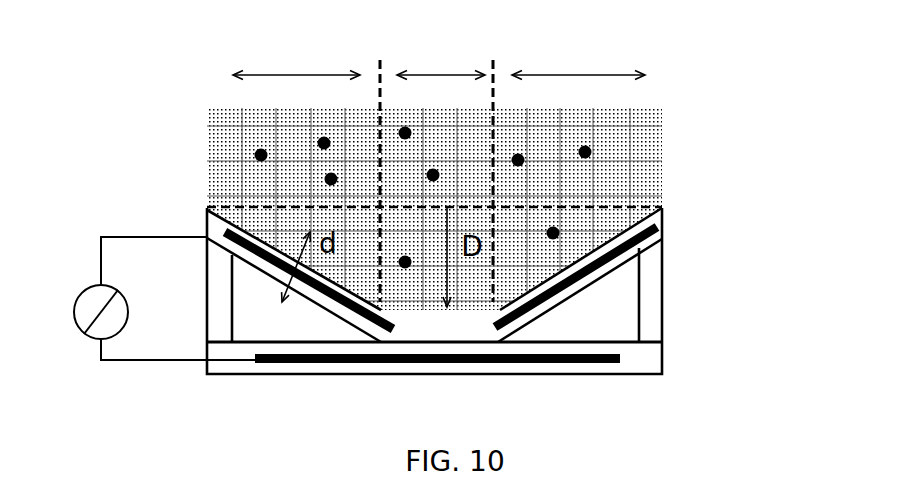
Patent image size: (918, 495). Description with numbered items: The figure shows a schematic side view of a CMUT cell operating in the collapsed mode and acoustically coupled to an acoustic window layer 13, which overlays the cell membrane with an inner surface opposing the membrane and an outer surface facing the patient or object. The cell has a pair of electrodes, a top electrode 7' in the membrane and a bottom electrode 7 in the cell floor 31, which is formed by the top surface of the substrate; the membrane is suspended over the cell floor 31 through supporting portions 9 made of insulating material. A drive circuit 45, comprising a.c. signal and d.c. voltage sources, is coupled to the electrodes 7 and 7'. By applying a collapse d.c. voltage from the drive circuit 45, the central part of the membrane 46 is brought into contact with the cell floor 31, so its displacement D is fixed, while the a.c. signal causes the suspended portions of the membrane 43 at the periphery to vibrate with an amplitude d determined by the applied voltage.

The acoustic window layer 13 is at (662, 140).
The suspended portions of the membrane 43 is at (439, 169).
The central part of the membrane 46 is at (441, 58).
The supporting portions 9 is at (647, 302).
The cell floor 31 is at (434, 402).
The top electrode 7' is at (461, 238).
The bottom electrode 7 is at (498, 403).
The drive circuit 45 is at (141, 298).